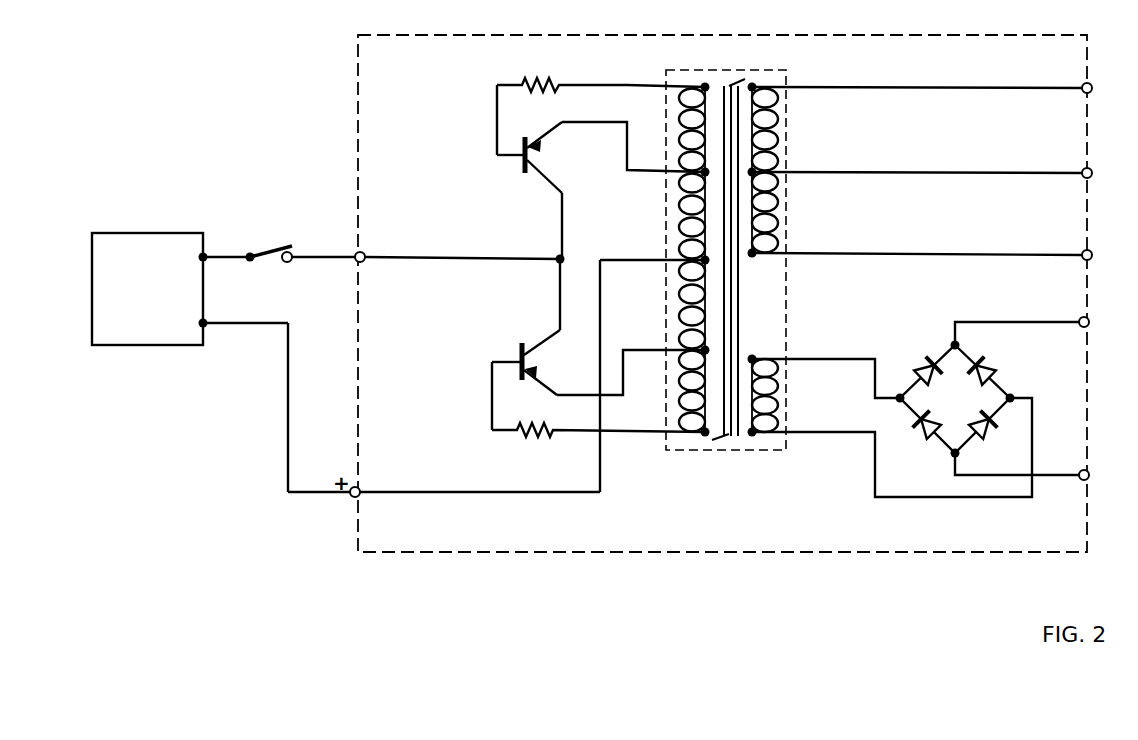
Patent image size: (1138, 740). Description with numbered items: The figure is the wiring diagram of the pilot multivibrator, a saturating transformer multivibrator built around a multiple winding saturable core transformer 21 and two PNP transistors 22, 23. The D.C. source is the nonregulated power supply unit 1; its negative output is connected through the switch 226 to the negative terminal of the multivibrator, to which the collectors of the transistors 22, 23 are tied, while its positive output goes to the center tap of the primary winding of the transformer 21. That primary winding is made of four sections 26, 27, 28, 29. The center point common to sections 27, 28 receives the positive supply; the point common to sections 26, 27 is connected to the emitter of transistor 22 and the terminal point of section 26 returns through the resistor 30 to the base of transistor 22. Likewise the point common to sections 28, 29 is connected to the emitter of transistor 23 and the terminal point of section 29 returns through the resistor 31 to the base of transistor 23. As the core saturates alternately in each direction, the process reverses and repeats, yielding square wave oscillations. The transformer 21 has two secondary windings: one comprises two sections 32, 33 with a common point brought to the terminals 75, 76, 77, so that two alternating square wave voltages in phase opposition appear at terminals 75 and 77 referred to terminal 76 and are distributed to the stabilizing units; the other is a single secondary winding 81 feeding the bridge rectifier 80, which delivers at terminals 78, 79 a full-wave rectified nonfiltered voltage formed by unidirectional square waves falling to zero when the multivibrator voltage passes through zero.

The nonregulated power supply unit 1 is at (182, 338).
The switch 226 is at (284, 250).
The transformer 21 is at (768, 80).
The transistor 22 is at (601, 190).
The transistor 23 is at (598, 327).
The primary winding section 26 is at (689, 128).
The primary winding section 27 is at (689, 214).
The primary winding section 28 is at (689, 303).
The primary winding section 29 is at (689, 391).
The resistor 30 is at (562, 103).
The resistor 31 is at (598, 414).
The secondary winding section 32 is at (770, 128).
The secondary winding section 33 is at (770, 213).
The output terminal 75 is at (922, 77).
The output terminal 76 is at (922, 162).
The output terminal 77 is at (922, 244).
The output terminal 78 is at (1022, 320).
The output terminal 79 is at (1022, 464).
The bridge rectifier 80 is at (892, 419).
The secondary winding 81 is at (770, 396).